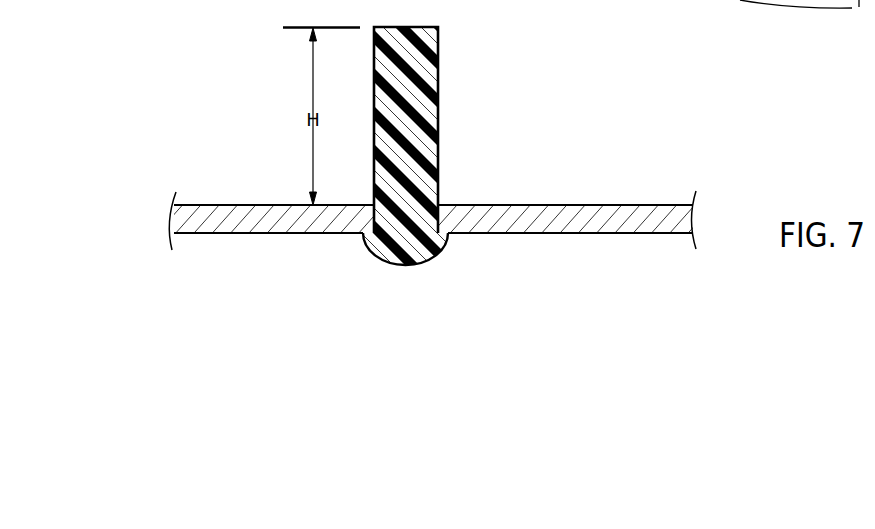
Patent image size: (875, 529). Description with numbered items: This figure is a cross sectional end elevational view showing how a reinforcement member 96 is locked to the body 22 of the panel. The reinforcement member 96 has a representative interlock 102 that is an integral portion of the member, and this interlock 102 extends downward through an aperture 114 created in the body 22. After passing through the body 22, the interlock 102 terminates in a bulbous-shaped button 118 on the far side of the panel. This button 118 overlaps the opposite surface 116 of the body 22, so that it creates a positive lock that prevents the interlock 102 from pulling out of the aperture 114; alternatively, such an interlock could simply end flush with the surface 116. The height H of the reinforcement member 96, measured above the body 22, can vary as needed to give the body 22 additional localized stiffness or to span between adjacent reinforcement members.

The reinforcement member 96 is at (435, 87).
The body 22 is at (633, 210).
The aperture 114 is at (440, 218).
The opposite surface 116 is at (592, 235).
The interlock 102 is at (403, 228).
The bulbous-shaped button 118 is at (432, 261).